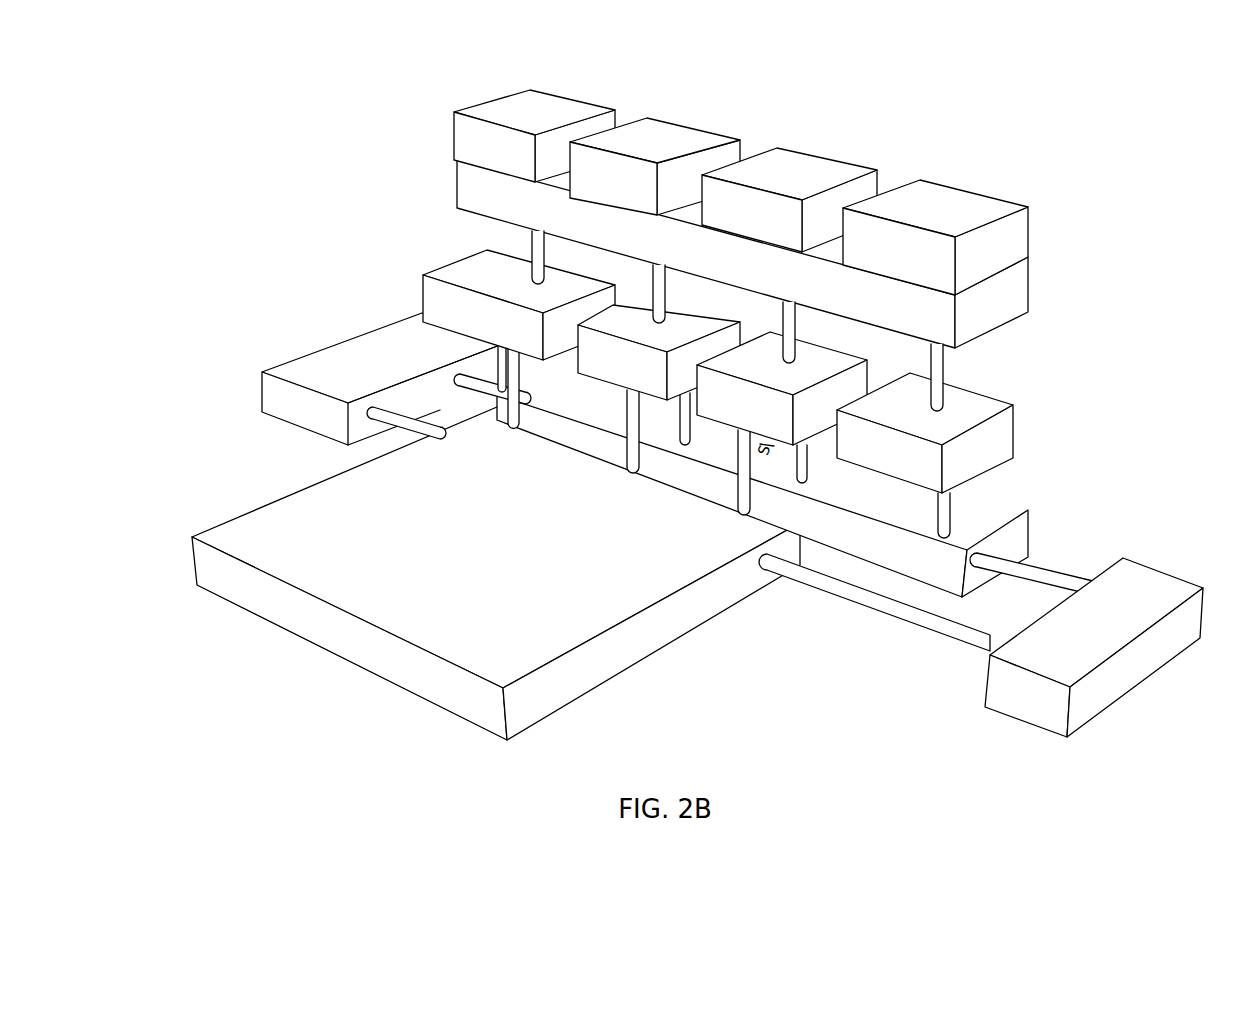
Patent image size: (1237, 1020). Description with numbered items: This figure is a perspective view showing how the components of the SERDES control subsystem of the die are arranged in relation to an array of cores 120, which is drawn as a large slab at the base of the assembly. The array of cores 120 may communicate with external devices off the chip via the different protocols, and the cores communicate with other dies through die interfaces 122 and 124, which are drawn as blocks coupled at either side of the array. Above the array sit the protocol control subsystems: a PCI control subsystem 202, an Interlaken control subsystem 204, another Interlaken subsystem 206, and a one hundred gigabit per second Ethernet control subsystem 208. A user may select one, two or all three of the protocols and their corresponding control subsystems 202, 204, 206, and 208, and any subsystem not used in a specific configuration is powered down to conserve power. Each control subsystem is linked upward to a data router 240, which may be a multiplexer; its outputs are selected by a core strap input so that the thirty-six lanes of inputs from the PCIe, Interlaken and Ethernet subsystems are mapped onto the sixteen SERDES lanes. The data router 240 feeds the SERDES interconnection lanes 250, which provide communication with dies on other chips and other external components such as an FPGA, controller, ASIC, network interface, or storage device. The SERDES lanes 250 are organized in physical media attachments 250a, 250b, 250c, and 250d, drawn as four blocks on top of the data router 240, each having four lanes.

The array of cores 120 is at (247, 532).
The die interface 122 is at (293, 360).
The die interface 124 is at (1170, 598).
The PCI control subsystem 202 is at (1004, 420).
The Interlaken control subsystem 204 is at (815, 363).
The Interlaken subsystem 206 is at (628, 318).
The 100 Gbps Ethernet control subsystem 208 is at (420, 290).
The data router 240 is at (455, 188).
The SERDES interconnection lanes 250 is at (789, 172).
The physical media attachment 250a is at (958, 197).
The physical media attachment 250b is at (813, 152).
The physical media attachment 250c is at (651, 131).
The physical media attachment 250d is at (514, 101).